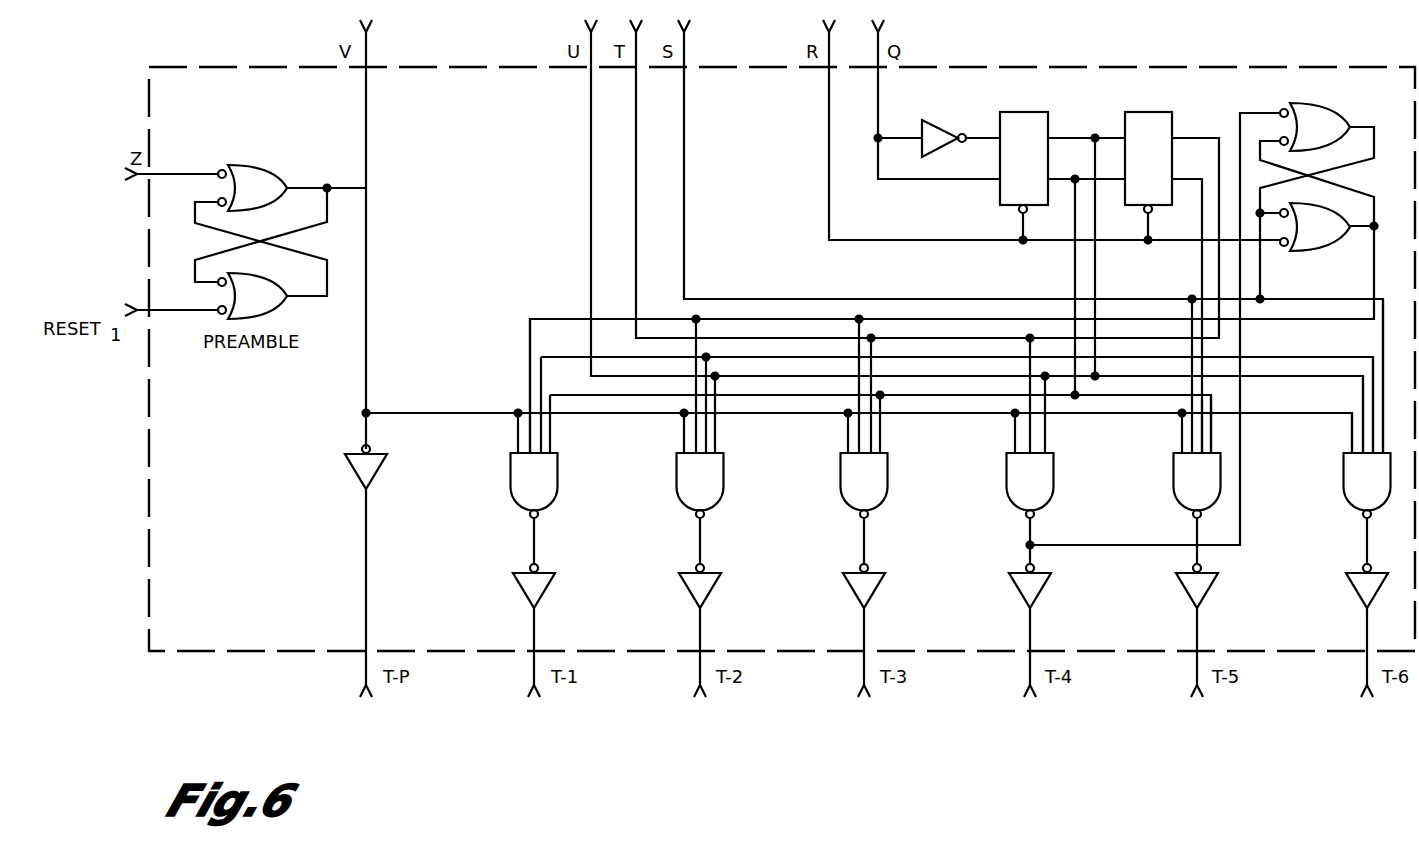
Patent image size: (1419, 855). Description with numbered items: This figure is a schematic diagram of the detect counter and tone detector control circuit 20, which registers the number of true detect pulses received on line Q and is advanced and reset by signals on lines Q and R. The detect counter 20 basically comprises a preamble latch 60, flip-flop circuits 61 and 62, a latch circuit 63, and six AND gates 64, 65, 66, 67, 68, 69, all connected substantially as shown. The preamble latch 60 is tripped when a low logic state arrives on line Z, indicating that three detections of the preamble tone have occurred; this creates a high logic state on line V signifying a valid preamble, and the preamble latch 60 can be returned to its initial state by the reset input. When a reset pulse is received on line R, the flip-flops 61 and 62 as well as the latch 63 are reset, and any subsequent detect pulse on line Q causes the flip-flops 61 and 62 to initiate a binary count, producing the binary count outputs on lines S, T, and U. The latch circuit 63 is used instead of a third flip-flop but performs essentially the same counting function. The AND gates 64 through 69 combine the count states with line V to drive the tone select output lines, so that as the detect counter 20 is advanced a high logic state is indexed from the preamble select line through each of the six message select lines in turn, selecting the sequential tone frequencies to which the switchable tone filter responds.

The detect counter 20 is at (149, 548).
The preamble latch 60 is at (313, 168).
The flip-flop circuit 61 is at (1045, 125).
The flip-flop circuit 62 is at (1168, 125).
The latch circuit 63 is at (1382, 126).
The AND gate 64 is at (514, 482).
The AND gate 65 is at (680, 482).
The AND gate 66 is at (846, 482).
The AND gate 67 is at (1012, 482).
The AND gate 68 is at (1179, 482).
The AND gate 69 is at (1349, 482).